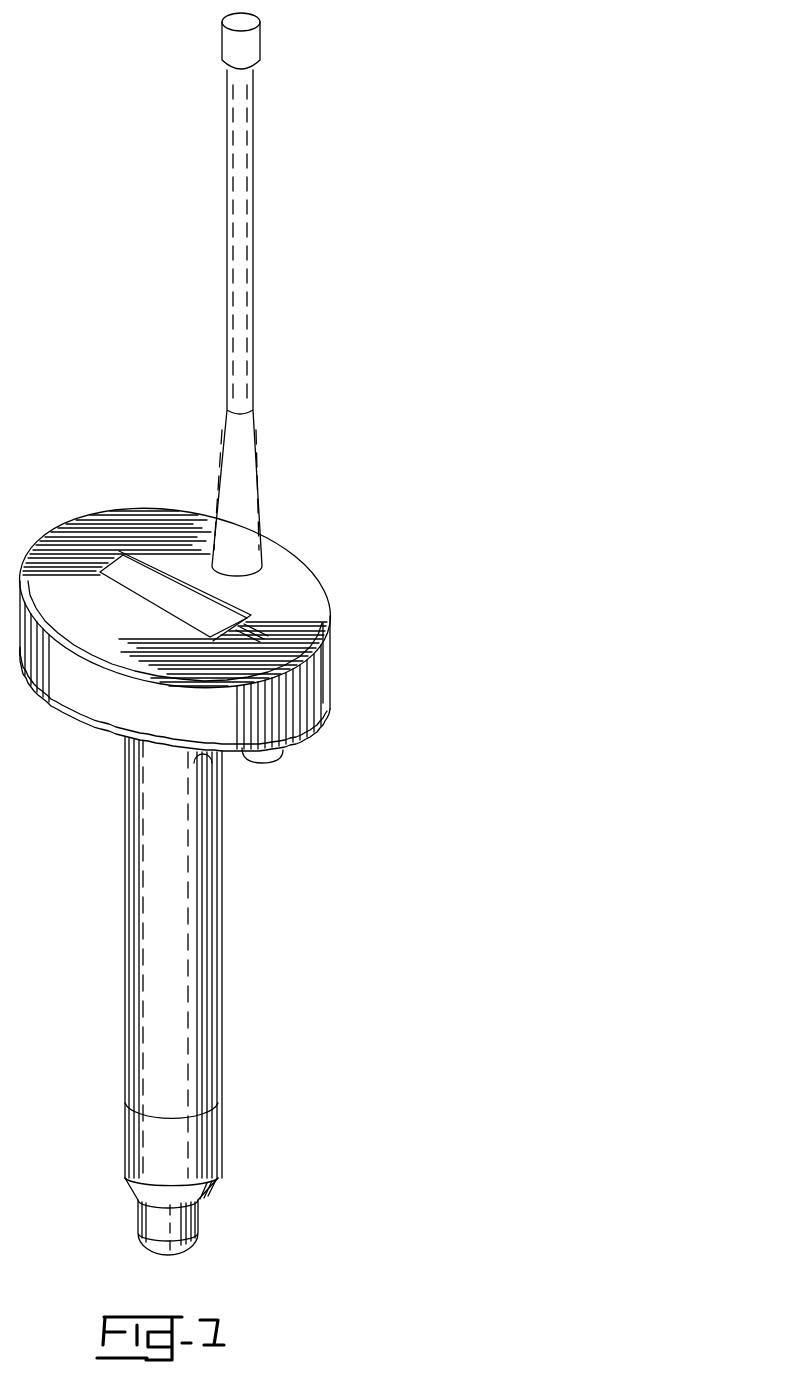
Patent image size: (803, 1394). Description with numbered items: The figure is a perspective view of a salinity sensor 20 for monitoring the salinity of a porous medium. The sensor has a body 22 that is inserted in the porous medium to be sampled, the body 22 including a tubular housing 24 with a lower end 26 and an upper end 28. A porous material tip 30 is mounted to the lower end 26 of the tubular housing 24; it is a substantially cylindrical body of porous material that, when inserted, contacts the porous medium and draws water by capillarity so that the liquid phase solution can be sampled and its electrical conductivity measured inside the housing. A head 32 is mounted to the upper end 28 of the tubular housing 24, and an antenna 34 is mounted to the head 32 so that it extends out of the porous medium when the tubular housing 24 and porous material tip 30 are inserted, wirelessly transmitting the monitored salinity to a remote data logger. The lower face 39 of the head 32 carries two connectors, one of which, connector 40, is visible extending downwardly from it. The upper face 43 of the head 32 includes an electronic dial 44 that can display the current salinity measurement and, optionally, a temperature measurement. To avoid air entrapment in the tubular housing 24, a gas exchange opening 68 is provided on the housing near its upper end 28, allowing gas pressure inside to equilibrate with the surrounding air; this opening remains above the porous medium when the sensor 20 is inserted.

The salinity sensor 20 is at (358, 523).
The body 22 is at (368, 697).
The tubular housing 24 is at (222, 898).
The lower end 26 is at (218, 1165).
The upper end 28 is at (222, 774).
The porous material tip 30 is at (200, 1218).
The head 32 is at (330, 648).
The antenna 34 is at (253, 278).
The lower face 39 is at (305, 726).
The connector 40 is at (283, 743).
The upper face 43 is at (278, 577).
The electronic dial 44 is at (215, 620).
The gas exchange opening 68 is at (197, 768).